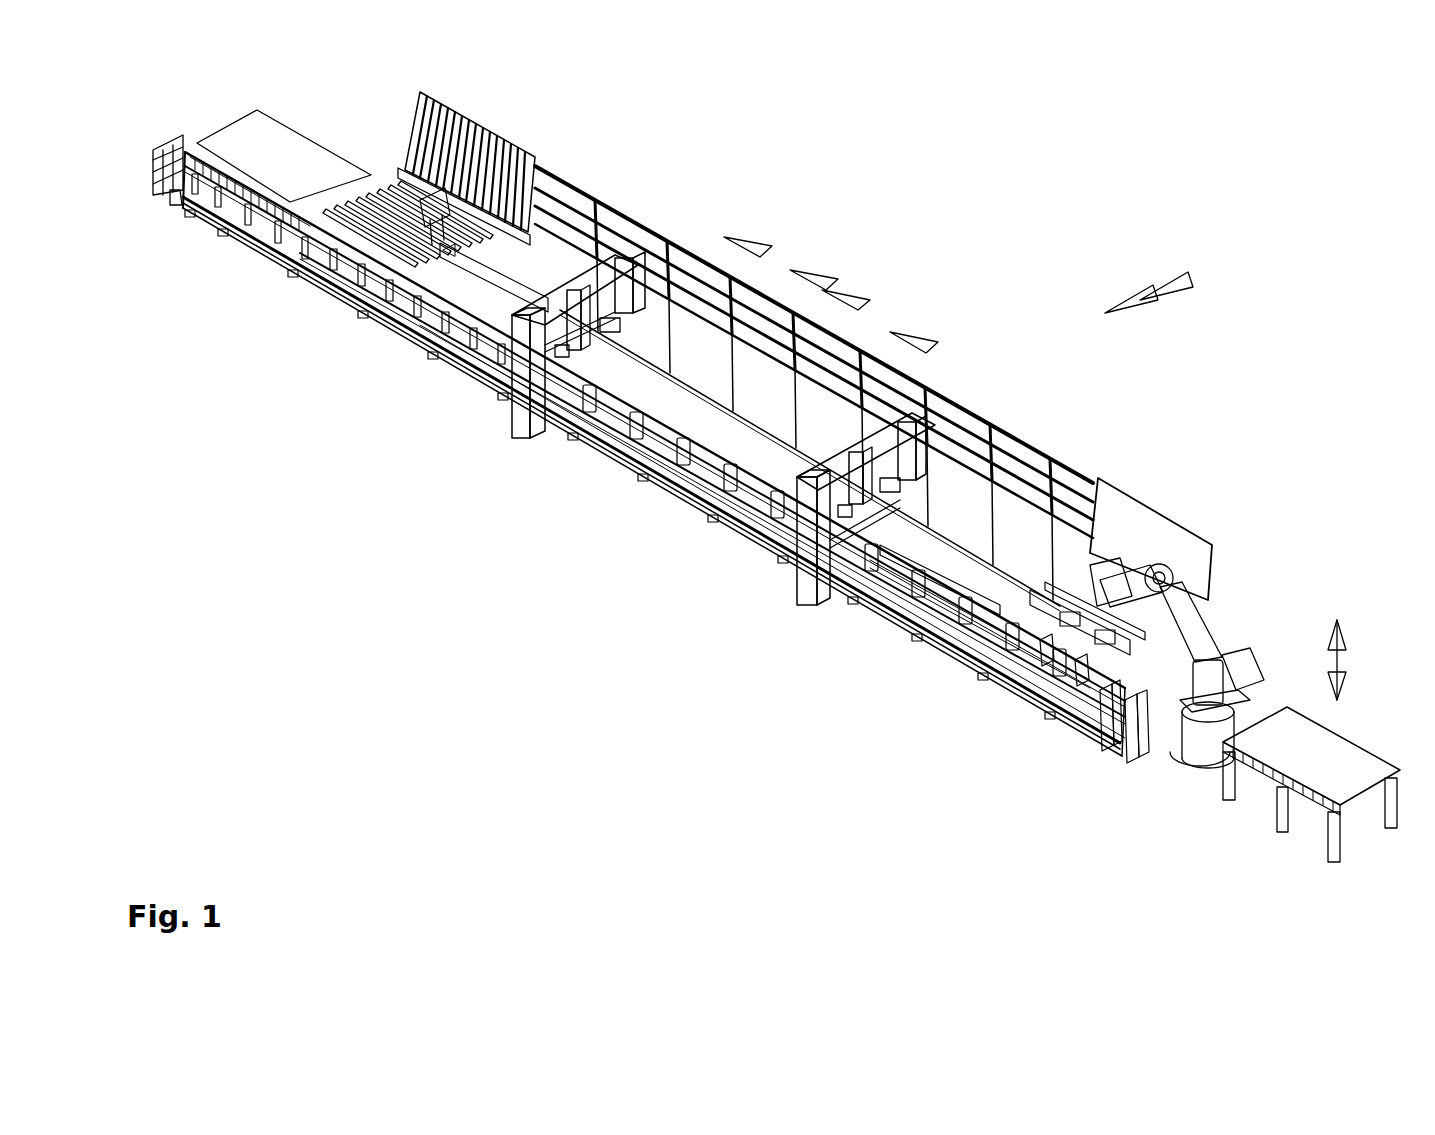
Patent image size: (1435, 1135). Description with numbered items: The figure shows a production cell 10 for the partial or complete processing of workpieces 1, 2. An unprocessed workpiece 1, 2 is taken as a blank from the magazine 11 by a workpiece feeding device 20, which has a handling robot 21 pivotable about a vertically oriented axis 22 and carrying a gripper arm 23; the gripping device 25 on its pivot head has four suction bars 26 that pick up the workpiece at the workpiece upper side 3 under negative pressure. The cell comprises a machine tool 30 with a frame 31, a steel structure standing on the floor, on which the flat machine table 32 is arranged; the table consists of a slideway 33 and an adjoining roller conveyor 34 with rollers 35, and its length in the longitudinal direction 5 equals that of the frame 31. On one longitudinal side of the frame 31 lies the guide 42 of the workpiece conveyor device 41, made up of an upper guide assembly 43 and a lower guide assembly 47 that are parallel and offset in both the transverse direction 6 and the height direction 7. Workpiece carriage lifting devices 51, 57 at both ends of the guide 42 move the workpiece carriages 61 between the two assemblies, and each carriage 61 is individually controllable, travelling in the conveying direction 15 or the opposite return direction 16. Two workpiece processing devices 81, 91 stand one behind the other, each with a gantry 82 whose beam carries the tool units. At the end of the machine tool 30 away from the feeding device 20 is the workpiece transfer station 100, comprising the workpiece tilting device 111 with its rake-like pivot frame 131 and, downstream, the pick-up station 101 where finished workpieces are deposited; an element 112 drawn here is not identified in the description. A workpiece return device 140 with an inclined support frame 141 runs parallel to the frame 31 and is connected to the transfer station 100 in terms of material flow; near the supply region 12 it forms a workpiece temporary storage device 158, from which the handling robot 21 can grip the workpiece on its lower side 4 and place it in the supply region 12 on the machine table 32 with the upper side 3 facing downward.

The workpiece 1 is at (902, 535).
The workpiece 2 is at (1040, 622).
The workpiece upper side 3 is at (917, 540).
The lower side 4 is at (1147, 538).
The longitudinal direction 5 is at (827, 293).
The transverse direction 6 is at (1125, 305).
The height direction 7 is at (1337, 660).
The production cell 10 is at (483, 450).
The magazine 11 is at (1365, 726).
The supply region 12 is at (1115, 750).
The conveying direction 15 is at (773, 262).
The return direction 16 is at (883, 327).
The workpiece feeding device 20 is at (1258, 627).
The handling robot 21 is at (1188, 748).
The vertically oriented axis 22 is at (1210, 630).
The gripper arm 23 is at (1203, 588).
The gripping device 25 is at (1010, 632).
The suction bars 26 is at (983, 674).
The machine tool 30 is at (722, 552).
The frame 31 is at (703, 503).
The machine table 32 is at (568, 440).
The slideway 33 is at (690, 497).
The roller conveyor 34 is at (293, 280).
The rollers 35 is at (253, 268).
The workpiece conveyor device 41 is at (462, 337).
The guide 42 is at (210, 230).
The upper guide assembly 43 is at (222, 250).
The lower guide assembly 47 is at (376, 290).
The workpiece carriage lifting device 51 is at (180, 187).
The workpiece carriage lifting device 57 is at (1140, 757).
The workpiece carriage 61 is at (1052, 712).
The workpiece processing device 81 is at (805, 540).
The gantry 82 is at (790, 570).
The workpiece processing device 91 is at (627, 253).
The workpiece transfer station 100 is at (347, 265).
The pick-up station 101 is at (228, 170).
The workpiece tilting device 111 is at (405, 128).
The feed device 112 is at (425, 203).
The pivot frame 131 is at (477, 140).
The workpiece return device 140 is at (567, 170).
The support frame 141 is at (598, 203).
The workpiece temporary storage device 158 is at (1158, 485).